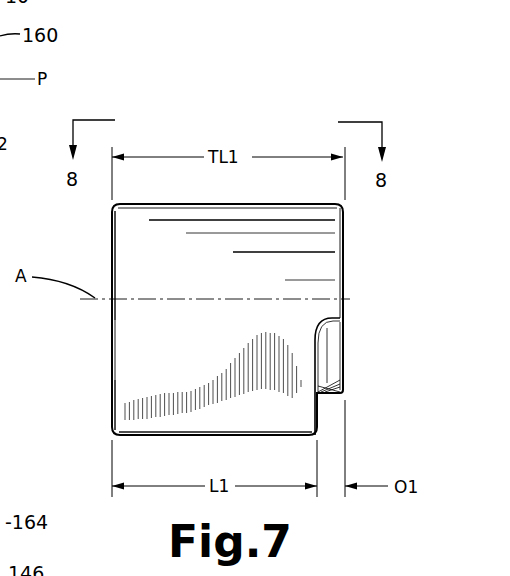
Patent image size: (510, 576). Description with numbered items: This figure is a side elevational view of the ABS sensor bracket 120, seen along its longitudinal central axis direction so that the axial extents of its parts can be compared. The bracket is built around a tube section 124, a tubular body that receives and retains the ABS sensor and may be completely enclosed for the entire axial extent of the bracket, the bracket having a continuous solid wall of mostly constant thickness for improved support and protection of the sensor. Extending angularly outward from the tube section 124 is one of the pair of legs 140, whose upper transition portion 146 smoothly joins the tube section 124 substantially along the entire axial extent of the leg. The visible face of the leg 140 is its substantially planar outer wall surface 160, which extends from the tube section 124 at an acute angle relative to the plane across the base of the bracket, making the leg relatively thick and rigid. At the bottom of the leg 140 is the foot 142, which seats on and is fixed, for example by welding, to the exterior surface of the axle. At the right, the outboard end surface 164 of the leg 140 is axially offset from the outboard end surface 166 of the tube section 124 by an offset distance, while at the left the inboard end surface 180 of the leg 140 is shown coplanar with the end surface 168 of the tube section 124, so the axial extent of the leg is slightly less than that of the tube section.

The ABS sensor bracket 120 is at (310, 105).
The tube section 124 is at (137, 247).
The end surface of the tube section 168 is at (112, 261).
The upper transition portion 146 is at (123, 305).
The outer wall surface 160 is at (209, 342).
The leg 140 is at (137, 363).
The inboard end surface 180 is at (112, 398).
The foot 142 is at (137, 433).
The outboard end surface of the tube section 166 is at (345, 260).
The outboard end surface 164 is at (318, 352).